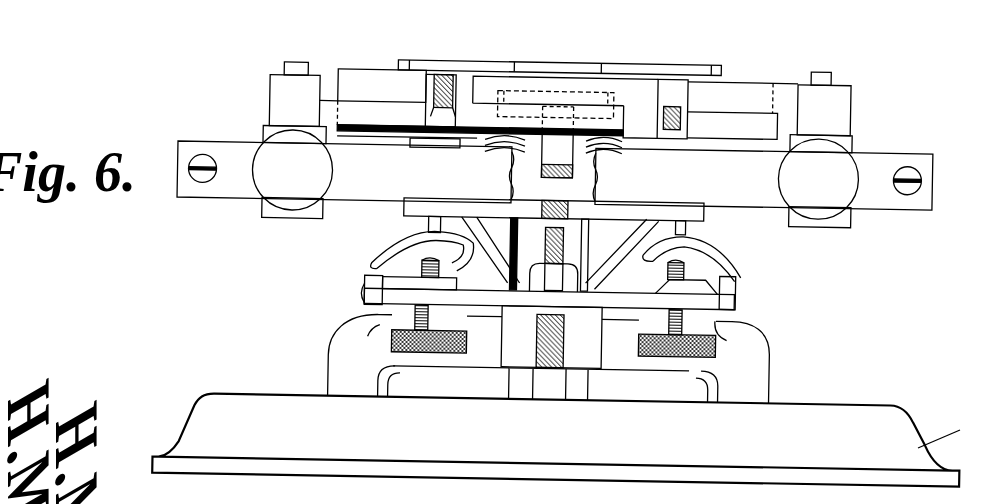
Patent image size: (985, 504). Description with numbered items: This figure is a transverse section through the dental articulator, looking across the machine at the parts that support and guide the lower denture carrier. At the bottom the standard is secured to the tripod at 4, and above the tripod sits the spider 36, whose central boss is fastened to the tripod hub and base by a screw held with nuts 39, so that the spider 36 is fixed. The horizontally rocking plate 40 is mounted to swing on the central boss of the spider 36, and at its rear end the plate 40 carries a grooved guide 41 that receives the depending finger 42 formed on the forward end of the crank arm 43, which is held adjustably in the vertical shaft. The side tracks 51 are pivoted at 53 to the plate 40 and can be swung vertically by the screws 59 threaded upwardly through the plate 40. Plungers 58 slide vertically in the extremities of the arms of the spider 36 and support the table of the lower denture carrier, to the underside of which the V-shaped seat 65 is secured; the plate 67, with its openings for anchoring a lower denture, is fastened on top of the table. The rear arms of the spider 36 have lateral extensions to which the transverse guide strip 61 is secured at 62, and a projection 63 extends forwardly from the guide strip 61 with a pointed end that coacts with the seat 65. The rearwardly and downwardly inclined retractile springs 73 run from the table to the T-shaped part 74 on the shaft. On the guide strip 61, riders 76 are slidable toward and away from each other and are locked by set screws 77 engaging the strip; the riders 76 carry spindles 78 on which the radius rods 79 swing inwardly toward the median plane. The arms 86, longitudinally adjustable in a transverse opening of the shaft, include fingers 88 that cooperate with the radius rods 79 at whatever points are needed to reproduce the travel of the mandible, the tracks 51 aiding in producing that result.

The securing point of standard to tripod 4 is at (746, 362).
The spider 36 is at (702, 212).
The nuts 39 is at (565, 379).
The plate 40 is at (640, 300).
The grooved guide 41 is at (536, 286).
The depending finger 42 is at (566, 286).
The crank arm 43 is at (566, 234).
The side tracks 51 is at (389, 262).
The pivot 53 is at (364, 286).
The plungers 58 is at (432, 220).
The screws 59 is at (397, 339).
The transverse guide strip 61 is at (886, 141).
The securing point of guide strip 62 is at (206, 176).
The projection 63 is at (577, 154).
The V-shaped seat 65 is at (517, 85).
The plate 67 is at (571, 56).
The retractile springs 73 is at (493, 140).
The T-shaped part 74 is at (548, 166).
The riders 76 is at (296, 217).
The set screws 77 is at (555, 174).
The spindles 78 is at (297, 60).
The radius rods 79 is at (362, 107).
The arms 86 is at (433, 82).
The fingers 88 is at (673, 77).